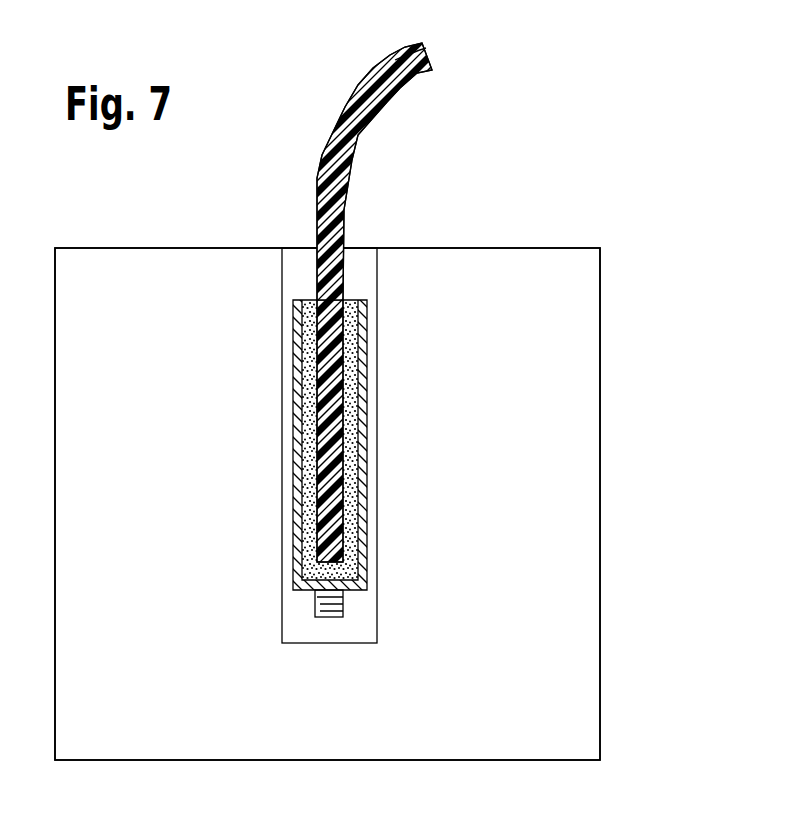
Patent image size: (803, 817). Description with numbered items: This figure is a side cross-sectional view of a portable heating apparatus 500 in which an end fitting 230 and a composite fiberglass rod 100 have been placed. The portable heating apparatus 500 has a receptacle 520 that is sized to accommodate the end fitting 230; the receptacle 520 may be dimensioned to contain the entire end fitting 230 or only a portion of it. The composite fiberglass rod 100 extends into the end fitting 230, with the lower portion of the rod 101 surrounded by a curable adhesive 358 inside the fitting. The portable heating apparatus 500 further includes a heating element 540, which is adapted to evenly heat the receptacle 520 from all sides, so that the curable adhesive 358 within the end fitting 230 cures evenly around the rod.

The composite fiberglass rod 100 is at (348, 168).
The distal portion of optical fiber 101 is at (345, 472).
The end fitting 230 is at (367, 340).
The curable adhesive 358 is at (353, 395).
The portable heating apparatus 500 is at (479, 242).
The receptacle 520 is at (377, 287).
The heating element 540 is at (583, 562).